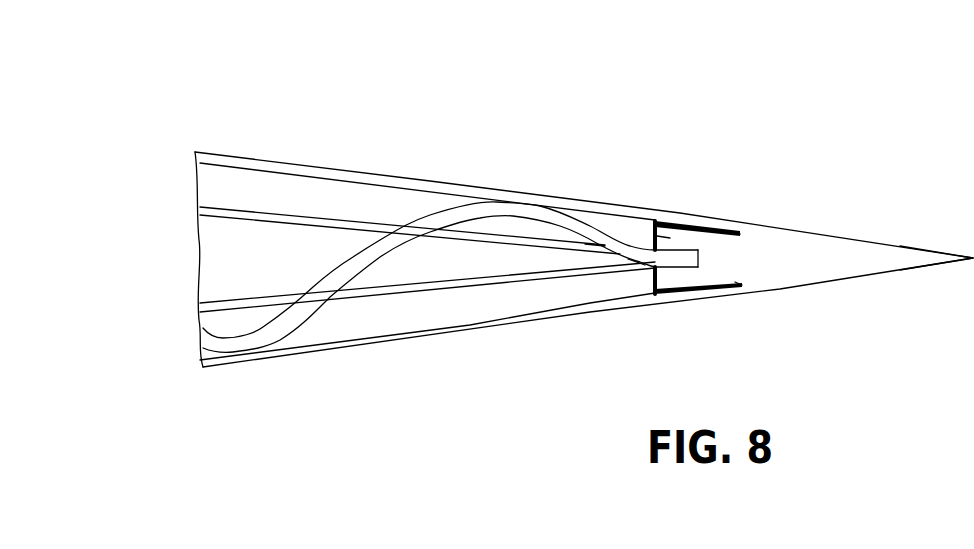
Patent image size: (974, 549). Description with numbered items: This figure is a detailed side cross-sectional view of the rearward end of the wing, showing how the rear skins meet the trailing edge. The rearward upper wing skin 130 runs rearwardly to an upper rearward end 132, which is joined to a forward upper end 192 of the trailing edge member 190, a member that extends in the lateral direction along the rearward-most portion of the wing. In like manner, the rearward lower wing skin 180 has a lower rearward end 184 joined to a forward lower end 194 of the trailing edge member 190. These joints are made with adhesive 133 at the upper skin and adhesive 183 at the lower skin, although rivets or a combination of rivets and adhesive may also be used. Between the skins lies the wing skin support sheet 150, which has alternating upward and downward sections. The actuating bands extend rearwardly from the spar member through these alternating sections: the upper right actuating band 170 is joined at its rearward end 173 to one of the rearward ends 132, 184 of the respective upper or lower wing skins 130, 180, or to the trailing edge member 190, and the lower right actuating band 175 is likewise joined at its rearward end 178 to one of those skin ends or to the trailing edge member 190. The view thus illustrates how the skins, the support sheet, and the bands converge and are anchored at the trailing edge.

The rearward upper wing skin 130 is at (275, 161).
The upper rearward end 132 is at (708, 229).
The adhesive 133 is at (729, 232).
The wing skin support sheet 150 is at (348, 270).
The upper right actuating band 170 is at (368, 224).
The rearward end 173 is at (593, 252).
The lower right actuating band 175 is at (448, 290).
The rearward end 178 is at (635, 263).
The rearward lower wing skin 180 is at (344, 353).
The adhesive 183 is at (738, 262).
The lower rearward end 184 is at (738, 262).
The trailing edge member 190 is at (885, 242).
The forward upper end 192 is at (668, 240).
The forward lower end 194 is at (673, 278).